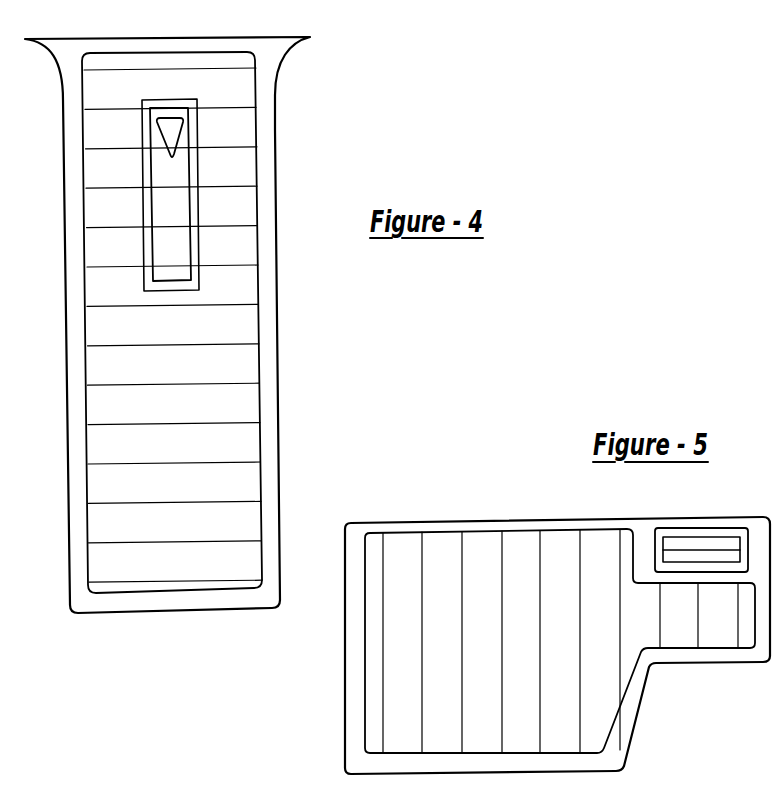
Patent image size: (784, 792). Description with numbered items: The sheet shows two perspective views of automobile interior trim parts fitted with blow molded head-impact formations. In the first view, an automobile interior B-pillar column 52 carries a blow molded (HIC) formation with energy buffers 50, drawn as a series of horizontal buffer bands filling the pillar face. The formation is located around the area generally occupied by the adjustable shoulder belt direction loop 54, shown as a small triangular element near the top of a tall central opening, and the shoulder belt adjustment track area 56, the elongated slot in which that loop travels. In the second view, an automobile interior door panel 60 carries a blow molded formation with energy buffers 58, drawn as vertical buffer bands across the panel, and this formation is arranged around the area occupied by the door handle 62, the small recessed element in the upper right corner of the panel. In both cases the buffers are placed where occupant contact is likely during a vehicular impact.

In FIG. 4, the blow molded (HIC) formation with energy buffers 50 is at (255, 83).
In FIG. 4, the B-pillar 52 is at (310, 37).
In FIG. 4, the adjustable shoulder belt direction loop 54 is at (172, 157).
In FIG. 4, the shoulder belt adjustment track area 56 is at (185, 212).
In FIG. 5, the blow molded formation with energy buffers 58 is at (473, 531).
In FIG. 5, the door panel 60 is at (382, 521).
In FIG. 5, the door handle 62 is at (723, 528).